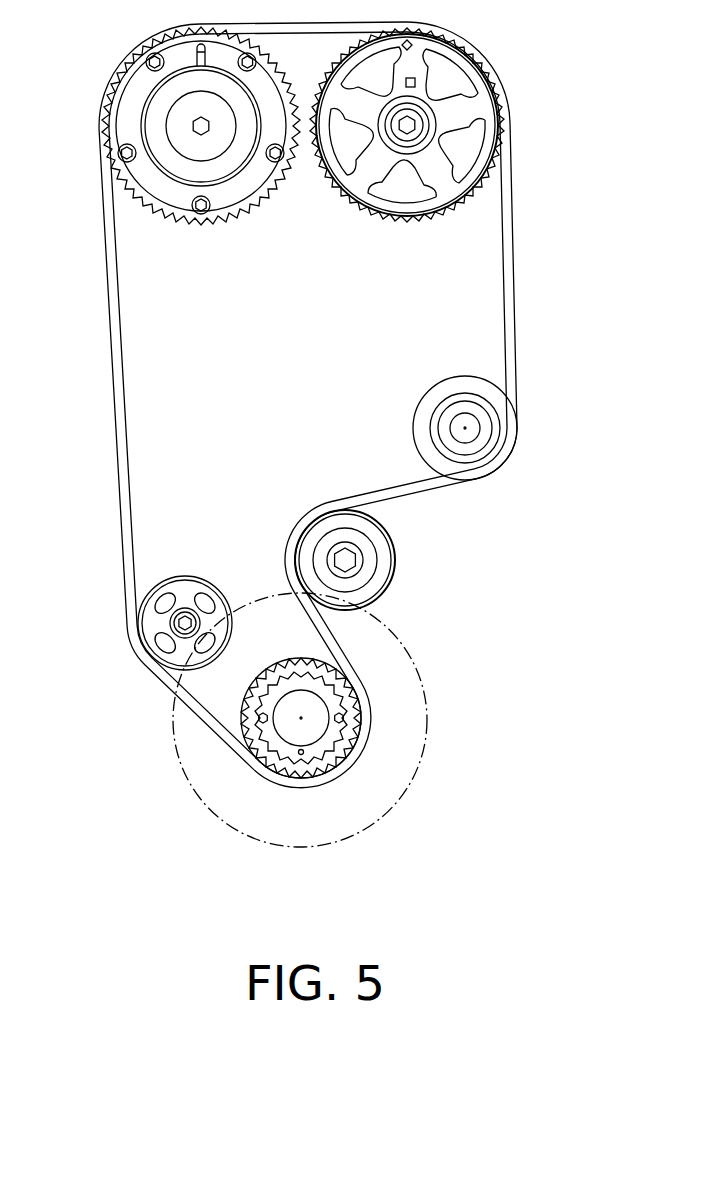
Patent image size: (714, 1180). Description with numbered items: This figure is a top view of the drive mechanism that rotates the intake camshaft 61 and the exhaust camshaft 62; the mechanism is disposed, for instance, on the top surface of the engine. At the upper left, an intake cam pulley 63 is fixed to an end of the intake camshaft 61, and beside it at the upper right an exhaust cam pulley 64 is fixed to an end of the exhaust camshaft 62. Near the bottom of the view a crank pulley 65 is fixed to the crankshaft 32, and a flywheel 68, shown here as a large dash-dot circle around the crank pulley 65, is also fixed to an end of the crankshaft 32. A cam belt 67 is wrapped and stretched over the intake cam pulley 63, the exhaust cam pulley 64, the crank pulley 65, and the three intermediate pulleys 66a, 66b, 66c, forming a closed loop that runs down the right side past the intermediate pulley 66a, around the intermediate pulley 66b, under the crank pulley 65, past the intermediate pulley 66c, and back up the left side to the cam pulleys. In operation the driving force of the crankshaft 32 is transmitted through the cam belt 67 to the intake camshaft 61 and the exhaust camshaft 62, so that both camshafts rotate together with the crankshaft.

The crankshaft 32 is at (305, 716).
The intake camshaft 61 is at (193, 126).
The exhaust camshaft 62 is at (423, 127).
The intake cam pulley 63 is at (172, 126).
The exhaust cam pulley 64 is at (445, 125).
The crank pulley 65 is at (367, 715).
The intermediate pulley 66a is at (505, 425).
The intermediate pulley 66b is at (385, 558).
The intermediate pulley 66c is at (137, 623).
The cam belt 67 is at (508, 265).
The flywheel 68 is at (185, 768).